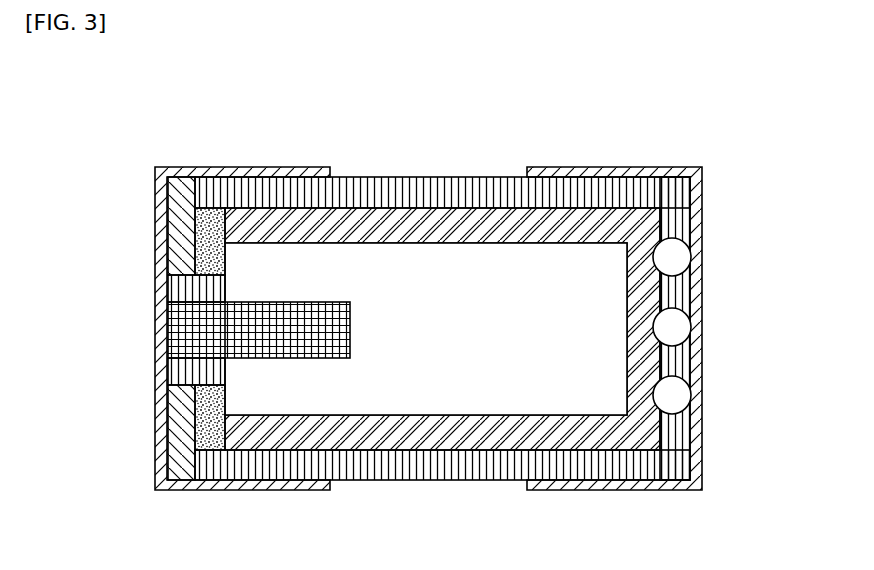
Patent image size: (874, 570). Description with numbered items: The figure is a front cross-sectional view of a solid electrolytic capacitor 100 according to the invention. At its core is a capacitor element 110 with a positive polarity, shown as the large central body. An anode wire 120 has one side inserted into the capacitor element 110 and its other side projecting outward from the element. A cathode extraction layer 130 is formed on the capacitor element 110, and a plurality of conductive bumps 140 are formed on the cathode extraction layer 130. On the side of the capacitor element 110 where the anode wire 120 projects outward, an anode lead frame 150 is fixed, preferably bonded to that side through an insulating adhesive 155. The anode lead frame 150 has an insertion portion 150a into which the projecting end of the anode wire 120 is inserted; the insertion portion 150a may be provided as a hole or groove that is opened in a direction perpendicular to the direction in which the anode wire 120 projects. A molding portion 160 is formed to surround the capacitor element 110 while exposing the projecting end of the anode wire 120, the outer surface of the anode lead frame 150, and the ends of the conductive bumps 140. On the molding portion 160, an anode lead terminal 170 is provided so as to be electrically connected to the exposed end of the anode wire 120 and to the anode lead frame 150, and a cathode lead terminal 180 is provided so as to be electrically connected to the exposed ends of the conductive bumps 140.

The solid electrolytic capacitor 100 is at (415, 309).
The capacitor element 110 is at (386, 258).
The anode wire 120 is at (177, 335).
The cathode extraction layer 130 is at (498, 226).
The conductive bumps 140 is at (674, 327).
The anode lead frame 150 is at (177, 233).
The insertion portion 150a is at (188, 288).
The insulating adhesive 155 is at (185, 420).
The molding portion 160 is at (678, 436).
The anode lead terminal 170 is at (244, 489).
The cathode lead terminal 180 is at (617, 489).